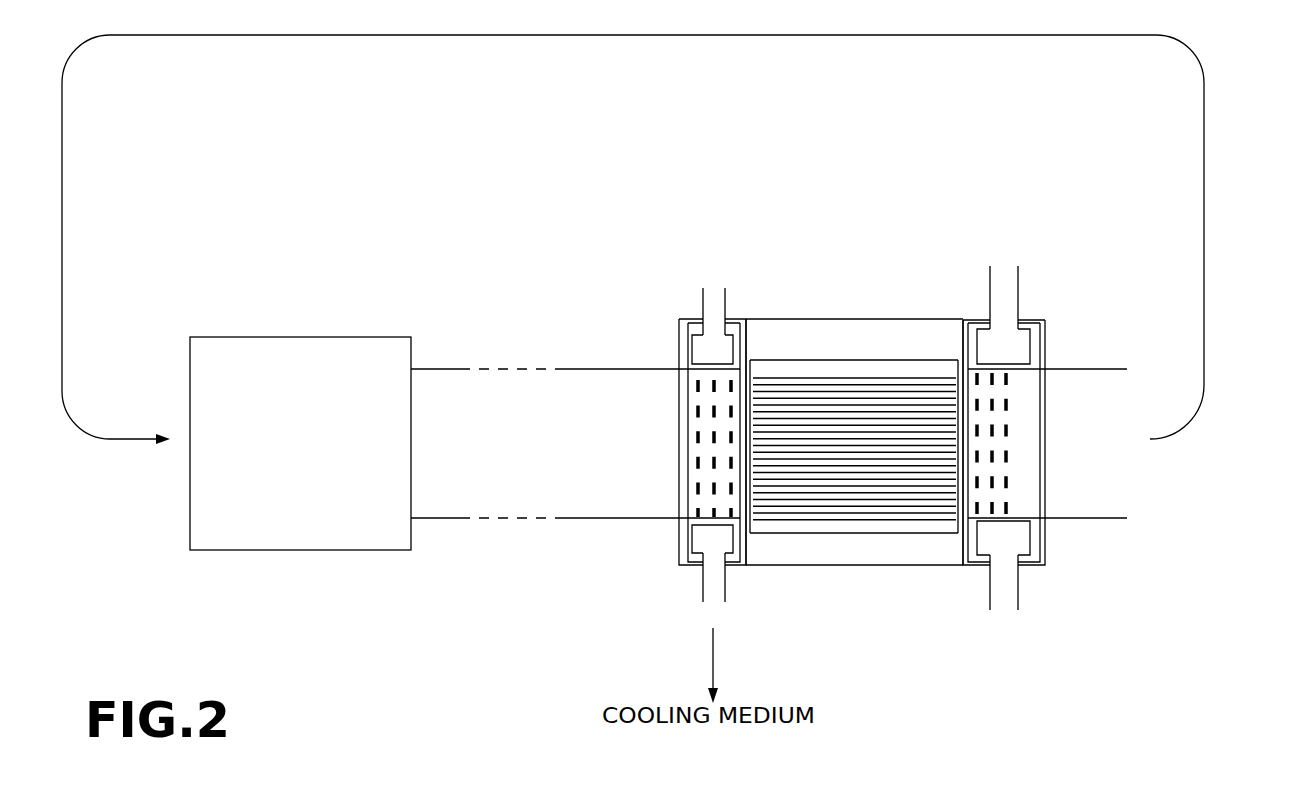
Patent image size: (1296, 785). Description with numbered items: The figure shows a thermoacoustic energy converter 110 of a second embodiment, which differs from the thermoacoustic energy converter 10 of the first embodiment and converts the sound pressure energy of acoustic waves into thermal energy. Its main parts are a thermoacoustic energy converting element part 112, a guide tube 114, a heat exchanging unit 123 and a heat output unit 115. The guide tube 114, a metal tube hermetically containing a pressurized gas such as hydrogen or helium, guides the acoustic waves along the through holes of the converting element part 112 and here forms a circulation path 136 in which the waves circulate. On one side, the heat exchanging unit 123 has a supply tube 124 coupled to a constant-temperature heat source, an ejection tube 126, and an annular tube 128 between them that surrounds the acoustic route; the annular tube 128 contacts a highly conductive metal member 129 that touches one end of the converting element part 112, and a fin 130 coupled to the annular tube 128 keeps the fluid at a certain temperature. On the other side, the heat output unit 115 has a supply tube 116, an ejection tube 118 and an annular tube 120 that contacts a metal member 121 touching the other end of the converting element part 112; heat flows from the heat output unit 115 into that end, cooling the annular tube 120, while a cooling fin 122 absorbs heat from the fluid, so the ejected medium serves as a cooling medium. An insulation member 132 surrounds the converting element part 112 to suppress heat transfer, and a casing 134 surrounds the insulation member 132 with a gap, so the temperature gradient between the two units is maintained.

The thermoacoustic energy converter 10 is at (301, 337).
The thermoacoustic energy converter 110 is at (942, 663).
The thermoacoustic energy converting element part 112 is at (900, 508).
The guide tube 114 is at (570, 519).
The heat output unit 115 is at (645, 548).
The supply tube 116 is at (712, 287).
The ejection tube 118 is at (711, 604).
The annular tube 120 is at (697, 350).
The metal member 121 is at (750, 340).
The cooling fin 122 is at (712, 494).
The heat exchanging unit 123 is at (1098, 596).
The supply tube 124 is at (1003, 289).
The ejection tube 126 is at (1005, 596).
The annular tube 128 is at (1004, 345).
The metal member 129 is at (957, 373).
The fin 130 is at (997, 480).
The insulation member 132 is at (922, 372).
The casing 134 is at (819, 320).
The circulation path 136 is at (1208, 94).